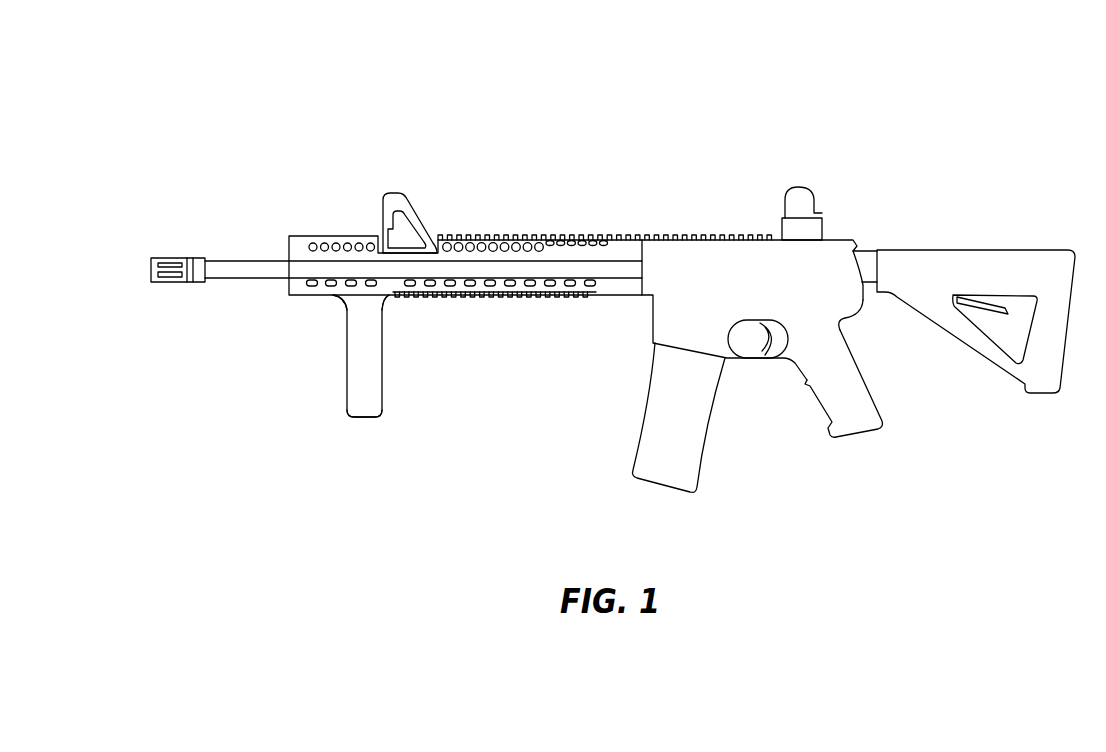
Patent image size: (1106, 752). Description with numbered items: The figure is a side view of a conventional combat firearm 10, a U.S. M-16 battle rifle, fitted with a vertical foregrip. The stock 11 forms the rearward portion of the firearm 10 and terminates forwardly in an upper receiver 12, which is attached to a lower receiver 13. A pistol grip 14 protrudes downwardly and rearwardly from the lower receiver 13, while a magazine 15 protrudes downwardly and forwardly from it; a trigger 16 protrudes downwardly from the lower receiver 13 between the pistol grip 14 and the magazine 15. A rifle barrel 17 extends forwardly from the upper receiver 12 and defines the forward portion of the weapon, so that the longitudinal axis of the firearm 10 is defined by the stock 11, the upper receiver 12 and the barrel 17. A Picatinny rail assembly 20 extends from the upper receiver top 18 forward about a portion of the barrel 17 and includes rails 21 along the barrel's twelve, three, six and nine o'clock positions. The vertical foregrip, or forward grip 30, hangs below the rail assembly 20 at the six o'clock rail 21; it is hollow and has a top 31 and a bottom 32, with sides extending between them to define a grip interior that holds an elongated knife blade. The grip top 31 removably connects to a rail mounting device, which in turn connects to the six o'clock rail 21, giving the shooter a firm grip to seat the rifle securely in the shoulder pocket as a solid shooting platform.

The firearm 10 is at (935, 120).
The stock 11 is at (1010, 250).
The upper receiver 12 is at (743, 278).
The lower receiver 13 is at (668, 318).
The pistol grip 14 is at (868, 382).
The magazine 15 is at (717, 447).
The trigger 16 is at (764, 328).
The rifle barrel 17 is at (248, 258).
The upper receiver top 18 is at (683, 237).
The Picatinny rail assembly 20 is at (506, 238).
The rails 21 is at (498, 297).
The forward grip 30 is at (358, 355).
The grip top 31 is at (334, 298).
The grip bottom 32 is at (360, 418).